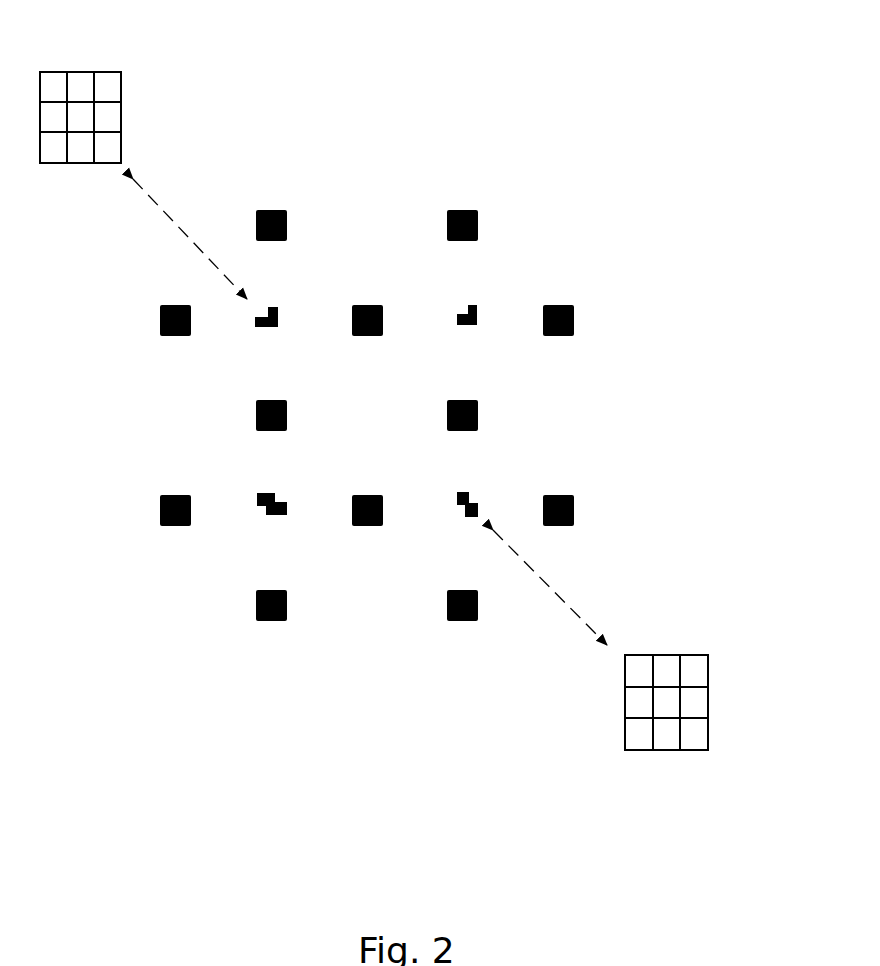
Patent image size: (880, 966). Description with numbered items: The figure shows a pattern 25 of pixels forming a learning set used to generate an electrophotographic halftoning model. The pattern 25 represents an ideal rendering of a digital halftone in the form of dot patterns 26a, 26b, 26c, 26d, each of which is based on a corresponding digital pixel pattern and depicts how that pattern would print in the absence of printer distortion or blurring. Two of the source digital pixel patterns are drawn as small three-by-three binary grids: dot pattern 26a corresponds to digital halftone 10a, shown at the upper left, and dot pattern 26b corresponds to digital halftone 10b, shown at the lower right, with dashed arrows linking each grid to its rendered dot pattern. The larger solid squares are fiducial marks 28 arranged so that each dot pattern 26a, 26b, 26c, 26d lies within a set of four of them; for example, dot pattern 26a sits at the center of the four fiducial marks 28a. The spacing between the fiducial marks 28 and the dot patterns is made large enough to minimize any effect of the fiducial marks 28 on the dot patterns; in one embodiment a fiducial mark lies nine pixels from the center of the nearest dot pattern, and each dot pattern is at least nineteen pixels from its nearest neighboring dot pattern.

The digital halftone 10a is at (115, 72).
The digital halftone 10b is at (673, 648).
The pattern 25 is at (686, 342).
The dot pattern 26a is at (255, 318).
The dot pattern 26b is at (478, 507).
The dot pattern 26c is at (268, 515).
The dot pattern 26d is at (468, 325).
The fiducial marks 28 is at (555, 307).
The fiducial marks 28a is at (375, 306).